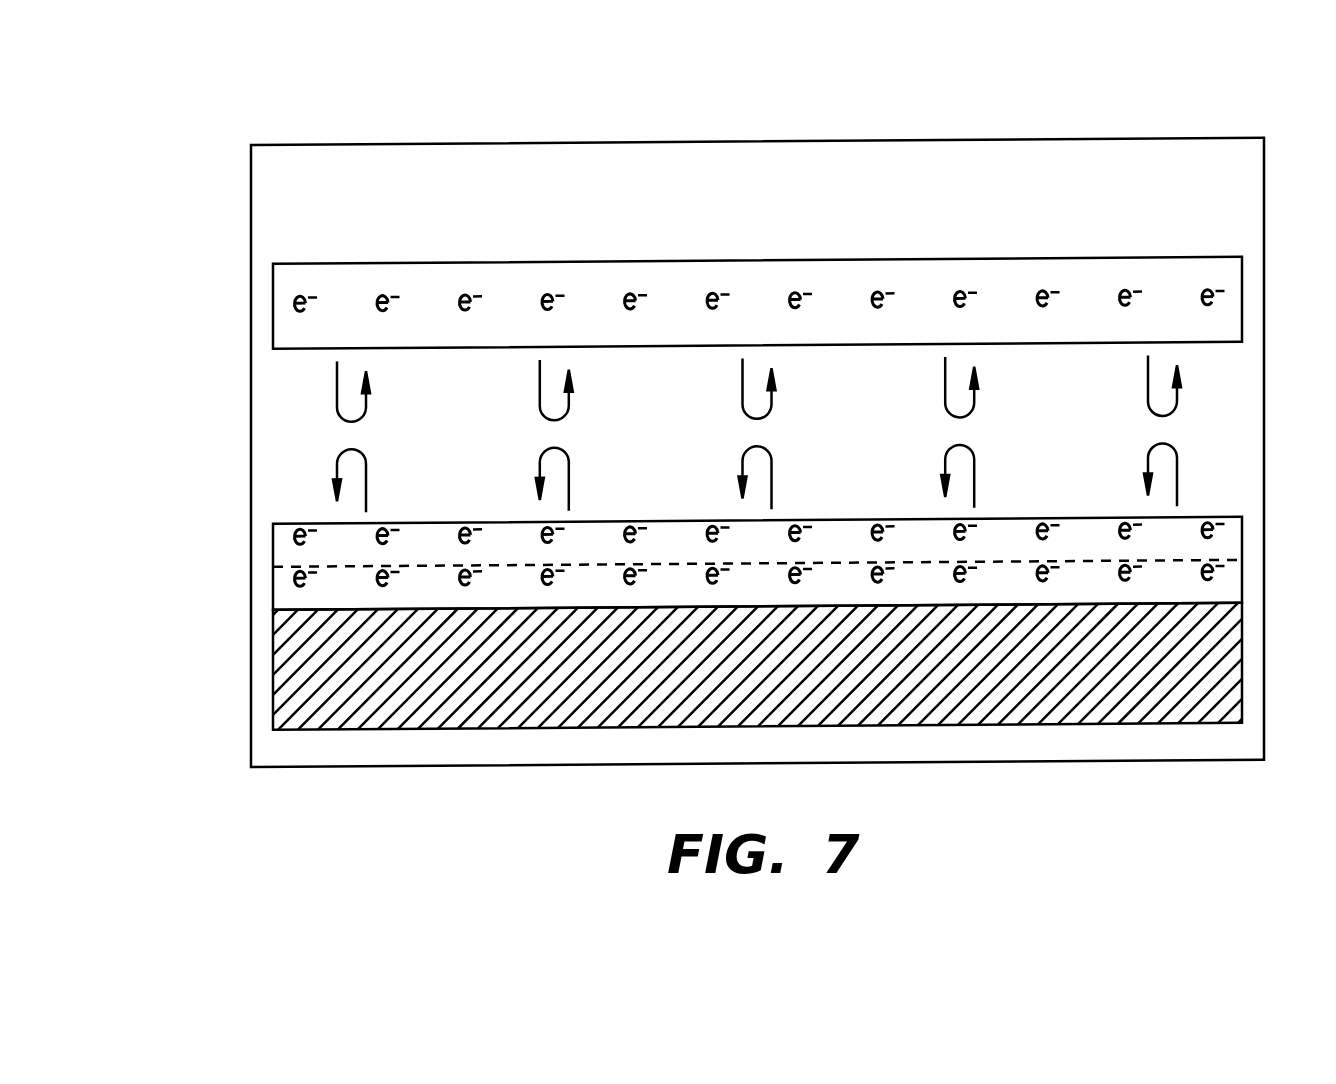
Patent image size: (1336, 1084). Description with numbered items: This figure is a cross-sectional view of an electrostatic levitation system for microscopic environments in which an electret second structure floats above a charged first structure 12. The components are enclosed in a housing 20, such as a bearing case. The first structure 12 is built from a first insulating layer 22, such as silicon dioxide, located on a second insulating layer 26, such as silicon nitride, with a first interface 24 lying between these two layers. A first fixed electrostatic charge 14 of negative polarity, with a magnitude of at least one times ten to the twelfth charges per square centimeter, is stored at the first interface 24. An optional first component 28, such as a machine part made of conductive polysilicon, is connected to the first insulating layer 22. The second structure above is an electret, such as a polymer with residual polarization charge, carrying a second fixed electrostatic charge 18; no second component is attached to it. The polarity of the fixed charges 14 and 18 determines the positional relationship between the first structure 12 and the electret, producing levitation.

The first structure 12 is at (225, 595).
The first fixed electrostatic charge 14 is at (272, 553).
The second fixed electrostatic charge 18 is at (272, 288).
The housing 20 is at (1242, 758).
The first insulating layer 22 is at (1236, 588).
The first interface 24 is at (1262, 560).
The second insulating layer 26 is at (1236, 532).
The first component 28 is at (1236, 707).